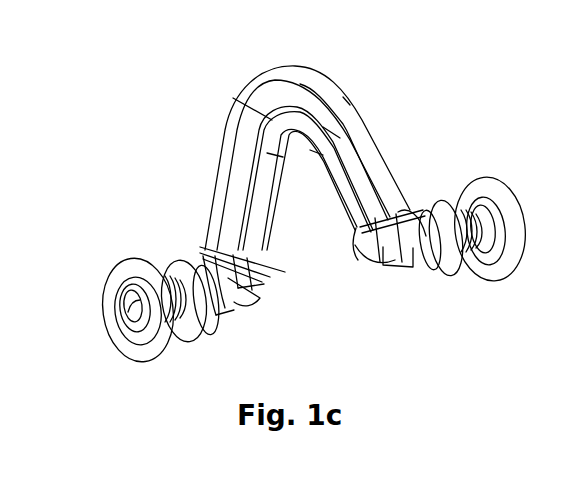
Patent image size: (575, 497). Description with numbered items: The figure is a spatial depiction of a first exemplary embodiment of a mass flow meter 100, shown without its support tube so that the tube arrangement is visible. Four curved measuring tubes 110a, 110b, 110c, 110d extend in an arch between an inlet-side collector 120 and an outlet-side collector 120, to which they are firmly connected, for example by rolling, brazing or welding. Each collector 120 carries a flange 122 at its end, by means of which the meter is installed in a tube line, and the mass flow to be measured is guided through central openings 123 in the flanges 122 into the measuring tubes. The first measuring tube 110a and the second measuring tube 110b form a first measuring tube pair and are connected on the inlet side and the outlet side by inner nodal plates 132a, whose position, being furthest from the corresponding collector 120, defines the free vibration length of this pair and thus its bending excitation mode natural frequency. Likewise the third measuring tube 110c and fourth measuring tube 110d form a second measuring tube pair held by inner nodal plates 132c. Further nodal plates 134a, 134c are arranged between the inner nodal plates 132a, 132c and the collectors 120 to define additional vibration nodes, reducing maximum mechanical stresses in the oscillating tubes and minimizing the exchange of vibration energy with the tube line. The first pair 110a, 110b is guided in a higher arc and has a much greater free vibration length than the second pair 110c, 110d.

The mass flow meter 100 is at (120, 89).
The first measuring tube 110a is at (228, 184).
The second measuring tube 110b is at (222, 160).
The third measuring tube 110c is at (240, 123).
The fourth measuring tube 110d is at (236, 98).
The collector 120 is at (177, 262).
The flange 122 is at (135, 257).
The central opening 123 is at (122, 310).
The inner nodal plate 132a is at (203, 252).
The inner nodal plate 132c is at (266, 284).
The further nodal plate 134a is at (227, 302).
The further nodal plate 134c is at (246, 300).